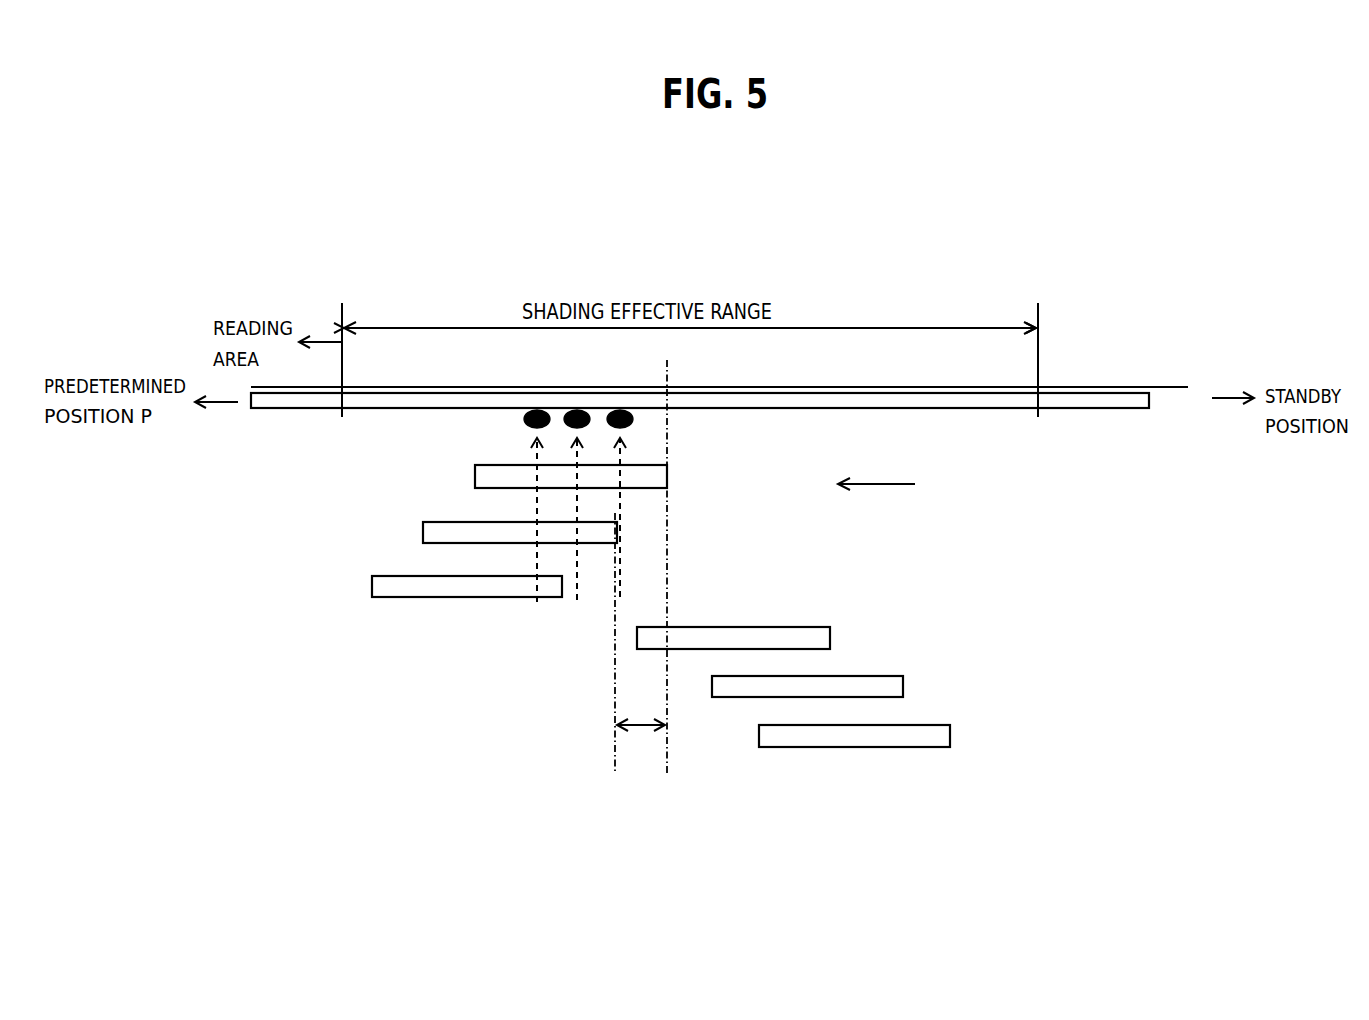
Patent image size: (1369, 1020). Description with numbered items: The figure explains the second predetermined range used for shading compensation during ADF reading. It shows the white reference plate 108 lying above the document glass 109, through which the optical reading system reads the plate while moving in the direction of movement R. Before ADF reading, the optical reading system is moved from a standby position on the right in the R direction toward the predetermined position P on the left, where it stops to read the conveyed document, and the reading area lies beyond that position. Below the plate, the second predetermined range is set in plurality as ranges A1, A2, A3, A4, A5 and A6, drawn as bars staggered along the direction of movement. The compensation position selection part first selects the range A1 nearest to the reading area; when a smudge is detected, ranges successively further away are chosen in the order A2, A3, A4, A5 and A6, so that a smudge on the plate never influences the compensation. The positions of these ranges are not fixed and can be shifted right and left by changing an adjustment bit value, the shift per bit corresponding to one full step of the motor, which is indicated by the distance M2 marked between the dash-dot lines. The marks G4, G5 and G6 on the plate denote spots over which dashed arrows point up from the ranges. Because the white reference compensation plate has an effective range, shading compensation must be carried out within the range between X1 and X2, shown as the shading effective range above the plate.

The white reference plate 108 is at (1178, 388).
The document glass 109 is at (254, 409).
The start of shading effective range X1 is at (341, 376).
The end of shading effective range X2 is at (1039, 376).
The dust particle G4 is at (537, 410).
The dust particle G5 is at (577, 410).
The dust particle G6 is at (620, 410).
The second predetermined range A1 is at (453, 587).
The second predetermined range A2 is at (507, 533).
The second predetermined range A3 is at (557, 477).
The second predetermined range A4 is at (746, 638).
The second predetermined range A5 is at (821, 686).
The second predetermined range A6 is at (867, 736).
The movement amount M2 is at (641, 739).
The direction of movement R is at (876, 496).